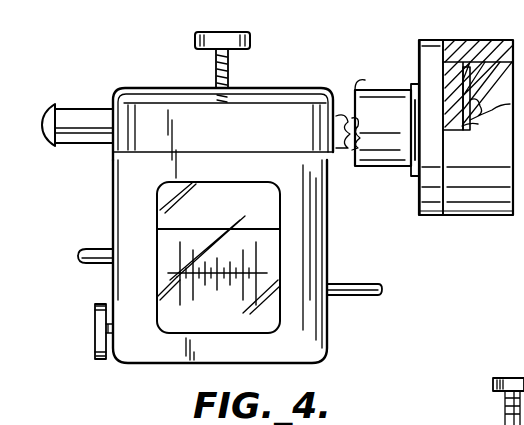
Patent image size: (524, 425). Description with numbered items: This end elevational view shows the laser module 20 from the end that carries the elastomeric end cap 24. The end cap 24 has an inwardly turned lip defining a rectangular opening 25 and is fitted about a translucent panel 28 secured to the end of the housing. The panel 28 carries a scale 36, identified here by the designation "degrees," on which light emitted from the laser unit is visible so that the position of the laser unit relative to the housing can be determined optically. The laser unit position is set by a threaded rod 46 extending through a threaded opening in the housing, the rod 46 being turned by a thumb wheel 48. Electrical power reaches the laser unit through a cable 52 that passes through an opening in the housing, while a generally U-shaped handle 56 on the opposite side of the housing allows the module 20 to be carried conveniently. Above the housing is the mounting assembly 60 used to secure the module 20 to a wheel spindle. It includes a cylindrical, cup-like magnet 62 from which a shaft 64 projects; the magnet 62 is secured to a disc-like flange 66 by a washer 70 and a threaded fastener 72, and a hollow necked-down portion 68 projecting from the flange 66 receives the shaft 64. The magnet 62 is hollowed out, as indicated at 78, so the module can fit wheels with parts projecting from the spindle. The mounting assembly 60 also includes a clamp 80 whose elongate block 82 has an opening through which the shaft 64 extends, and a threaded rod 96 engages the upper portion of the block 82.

The laser module 20 is at (450, 296).
The elastomeric end cap 24 is at (320, 337).
The rectangular opening 25 is at (272, 209).
The translucent panel 28 is at (270, 249).
The scale 36 is at (266, 304).
The threaded rod 46 is at (108, 334).
The thumb wheel 48 is at (96, 349).
The cable 52 is at (369, 282).
The handle 56 is at (88, 266).
The mounting assembly 60 is at (301, 58).
The magnet 62 is at (480, 214).
The shaft 64 is at (101, 112).
The flange 66 is at (428, 214).
The necked-down portion 68 is at (385, 165).
The washer 70 is at (470, 78).
The threaded fastener 72 is at (478, 118).
The hollowed out portion 78 is at (506, 85).
The clamp 80 is at (323, 73).
The elongate block 82 is at (180, 112).
The threaded rod 96 is at (505, 410).